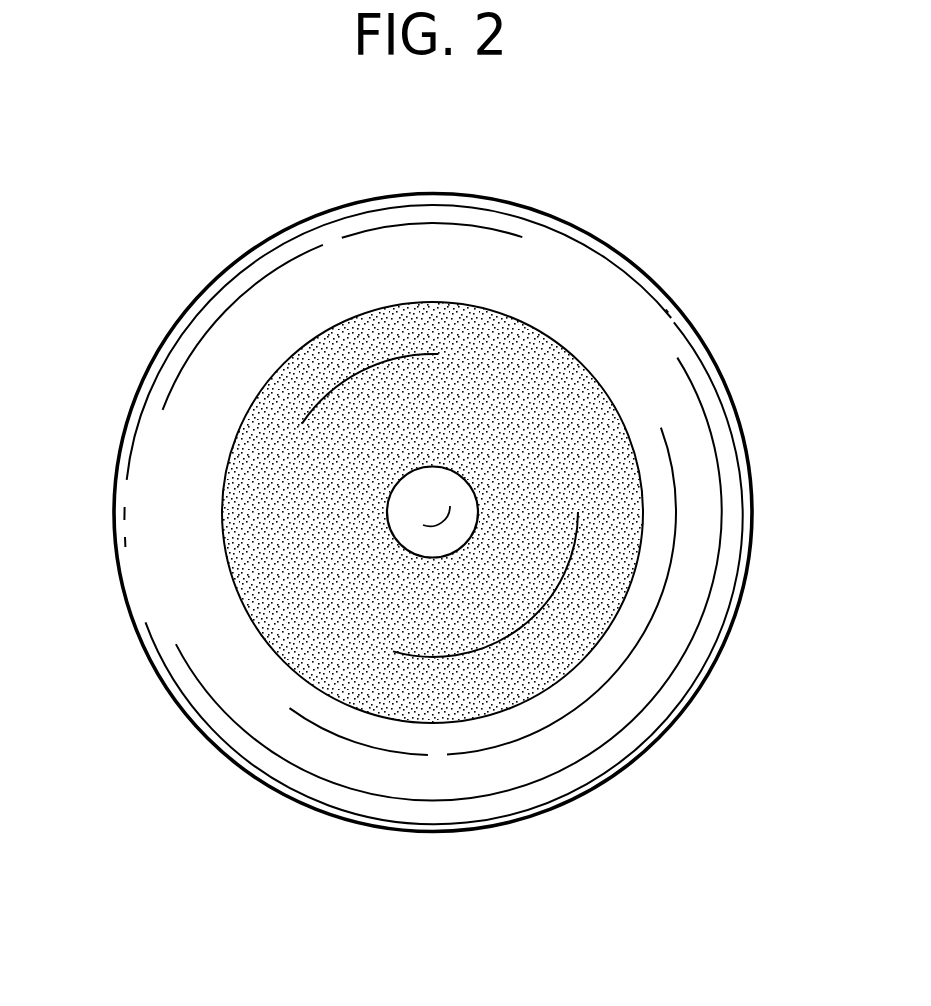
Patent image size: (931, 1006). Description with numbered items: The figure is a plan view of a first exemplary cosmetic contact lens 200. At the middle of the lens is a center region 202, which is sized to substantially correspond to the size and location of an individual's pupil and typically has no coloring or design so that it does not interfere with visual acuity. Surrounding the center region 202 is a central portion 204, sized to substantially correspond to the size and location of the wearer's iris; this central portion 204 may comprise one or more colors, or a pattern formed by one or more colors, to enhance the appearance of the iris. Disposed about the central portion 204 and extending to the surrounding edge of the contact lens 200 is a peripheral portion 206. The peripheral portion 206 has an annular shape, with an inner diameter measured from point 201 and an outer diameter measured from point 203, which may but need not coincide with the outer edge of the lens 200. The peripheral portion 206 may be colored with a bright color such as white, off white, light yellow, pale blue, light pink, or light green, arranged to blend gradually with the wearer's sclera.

The cosmetic contact lens 200 is at (473, 157).
The point 201 is at (643, 526).
The center region 202 is at (406, 535).
The point 203 is at (187, 308).
The central portion 204 is at (242, 492).
The peripheral portion 206 is at (685, 363).